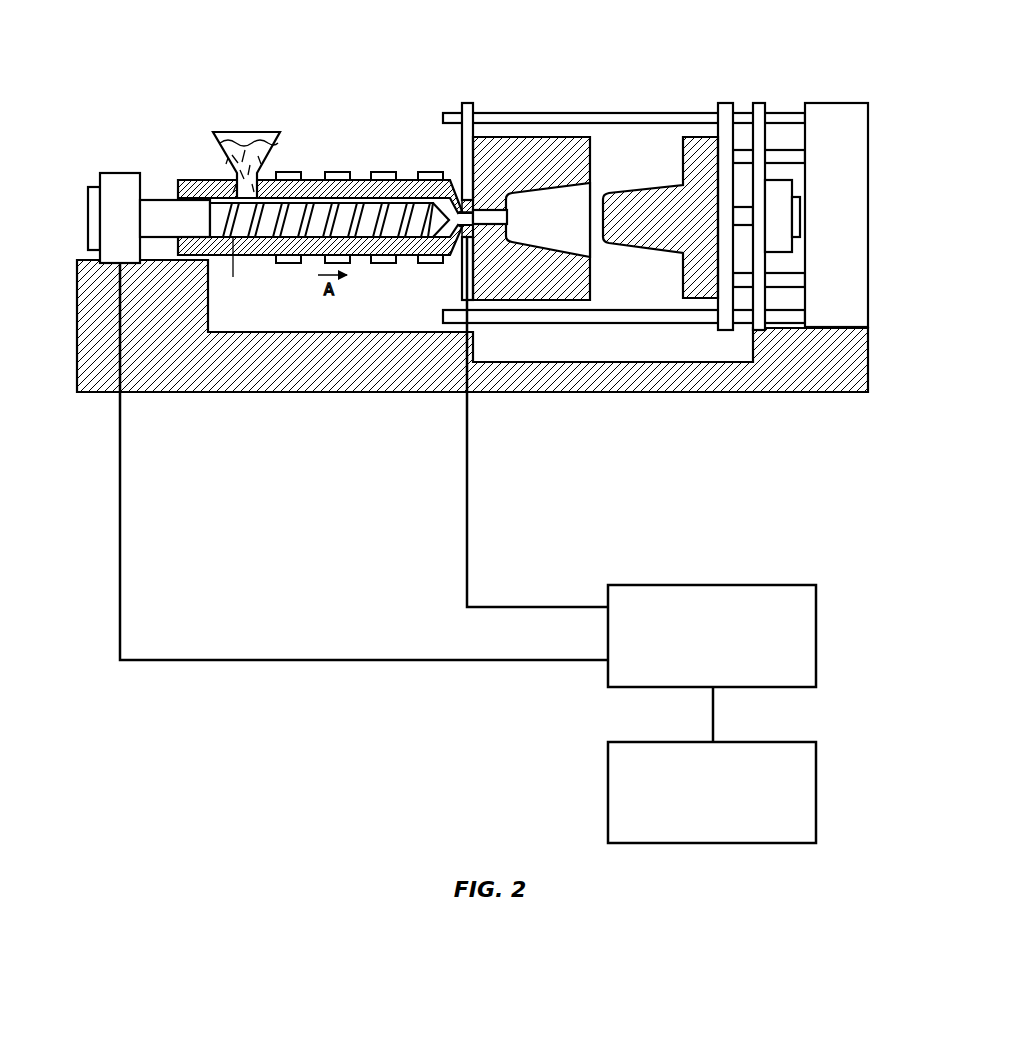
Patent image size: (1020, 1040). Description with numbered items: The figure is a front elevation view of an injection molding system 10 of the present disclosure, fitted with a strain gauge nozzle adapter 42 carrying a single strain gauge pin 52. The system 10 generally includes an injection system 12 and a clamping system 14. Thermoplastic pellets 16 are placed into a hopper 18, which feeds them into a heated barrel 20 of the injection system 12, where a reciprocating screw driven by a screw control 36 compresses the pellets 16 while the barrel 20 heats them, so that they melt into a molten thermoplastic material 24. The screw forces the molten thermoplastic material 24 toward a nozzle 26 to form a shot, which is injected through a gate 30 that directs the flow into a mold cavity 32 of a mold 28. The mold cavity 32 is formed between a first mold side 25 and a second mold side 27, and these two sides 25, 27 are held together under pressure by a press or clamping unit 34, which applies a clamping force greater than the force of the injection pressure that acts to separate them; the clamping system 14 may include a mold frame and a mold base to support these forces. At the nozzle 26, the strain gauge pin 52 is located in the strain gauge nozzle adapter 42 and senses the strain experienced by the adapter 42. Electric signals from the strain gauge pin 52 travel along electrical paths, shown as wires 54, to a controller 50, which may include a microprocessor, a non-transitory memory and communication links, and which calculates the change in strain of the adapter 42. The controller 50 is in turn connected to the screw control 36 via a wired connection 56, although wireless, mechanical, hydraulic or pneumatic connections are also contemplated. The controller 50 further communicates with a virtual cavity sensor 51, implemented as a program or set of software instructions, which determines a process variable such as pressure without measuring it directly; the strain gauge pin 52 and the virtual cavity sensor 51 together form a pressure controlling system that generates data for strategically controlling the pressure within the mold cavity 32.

The injection molding system 10 is at (355, 88).
The injection system 12 is at (252, 294).
The clamping system 14 is at (601, 402).
The thermoplastic pellets 16 is at (233, 153).
The hopper 18 is at (258, 132).
The heated barrel 20 is at (311, 170).
The molten thermoplastic material 24 is at (362, 212).
The first mold side 25 is at (538, 286).
The nozzle 26 is at (455, 206).
The second mold side 27 is at (660, 227).
The mold 28 is at (593, 133).
The gate 30 is at (495, 220).
The mold cavity 32 is at (552, 205).
The clamping unit 34 is at (810, 98).
The screw control 36 is at (118, 173).
The strain gauge nozzle adapter 42 is at (431, 262).
The controller 50 is at (785, 585).
The virtual cavity sensor 51 is at (608, 780).
The strain gauge pin 52 is at (446, 254).
The wires 54 is at (545, 607).
The wired connection 56 is at (283, 660).